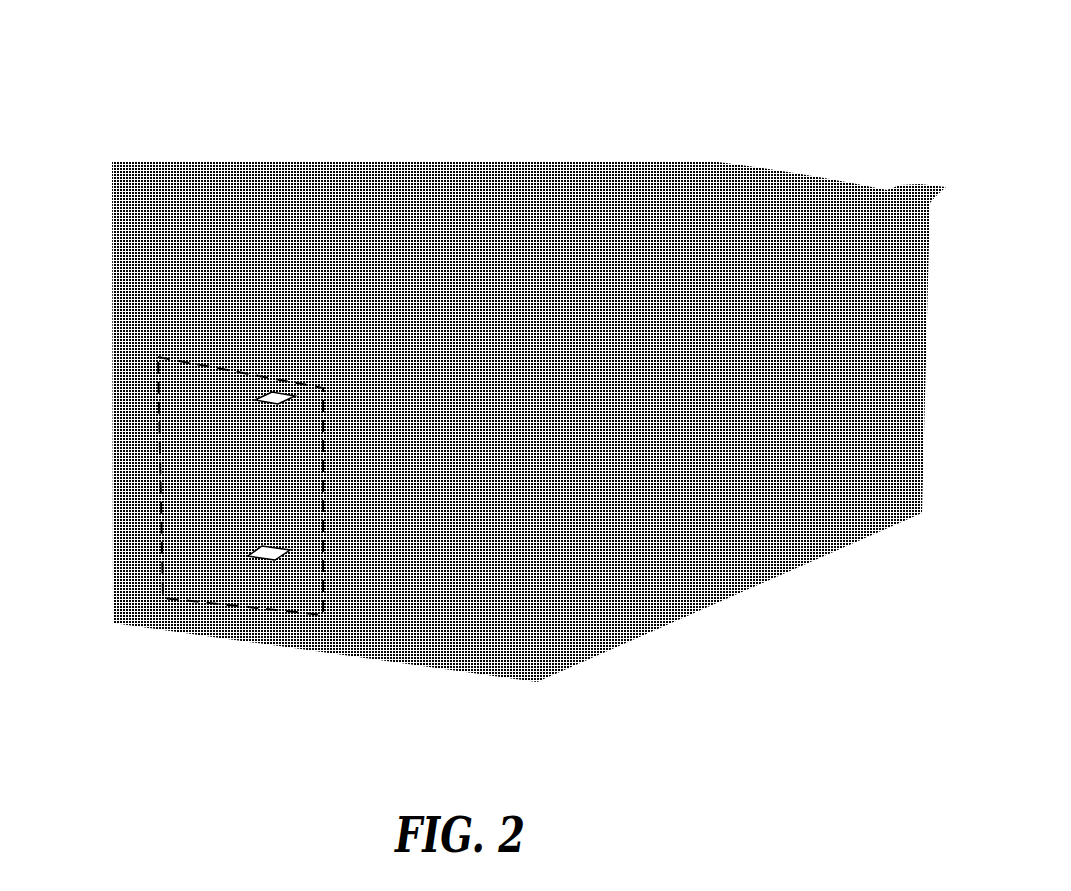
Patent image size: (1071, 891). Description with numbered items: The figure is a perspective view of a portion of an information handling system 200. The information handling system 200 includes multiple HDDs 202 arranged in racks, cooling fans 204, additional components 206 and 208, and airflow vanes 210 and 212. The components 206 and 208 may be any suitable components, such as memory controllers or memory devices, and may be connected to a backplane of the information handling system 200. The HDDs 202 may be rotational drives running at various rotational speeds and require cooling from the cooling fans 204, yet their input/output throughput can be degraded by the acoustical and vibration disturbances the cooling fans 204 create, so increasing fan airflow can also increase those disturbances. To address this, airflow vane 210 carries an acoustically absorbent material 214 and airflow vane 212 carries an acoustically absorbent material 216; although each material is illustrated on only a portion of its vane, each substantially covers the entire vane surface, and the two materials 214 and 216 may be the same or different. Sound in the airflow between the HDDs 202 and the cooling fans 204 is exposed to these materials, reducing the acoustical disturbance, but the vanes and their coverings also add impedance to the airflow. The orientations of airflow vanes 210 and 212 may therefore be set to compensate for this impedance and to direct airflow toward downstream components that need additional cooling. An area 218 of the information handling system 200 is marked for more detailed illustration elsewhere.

The information handling system 200 is at (647, 98).
The HDDs 202 is at (890, 240).
The cooling fans 204 is at (203, 345).
The additional component 206 is at (273, 325).
The additional component 208 is at (288, 523).
The airflow vane 210 is at (205, 397).
The airflow vane 212 is at (250, 567).
The acoustically absorbent material 214 is at (260, 396).
The acoustically absorbent material 216 is at (275, 562).
The area 218 is at (157, 463).